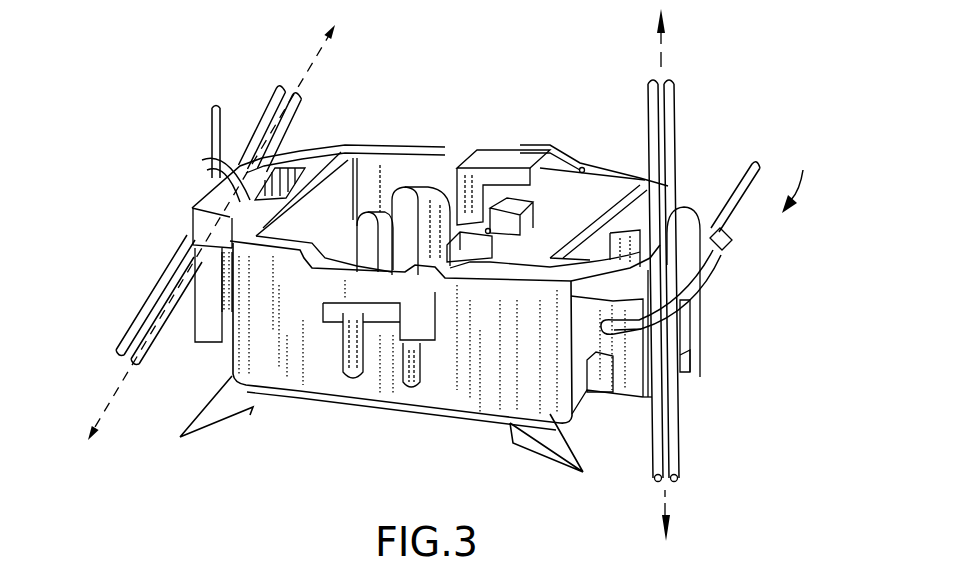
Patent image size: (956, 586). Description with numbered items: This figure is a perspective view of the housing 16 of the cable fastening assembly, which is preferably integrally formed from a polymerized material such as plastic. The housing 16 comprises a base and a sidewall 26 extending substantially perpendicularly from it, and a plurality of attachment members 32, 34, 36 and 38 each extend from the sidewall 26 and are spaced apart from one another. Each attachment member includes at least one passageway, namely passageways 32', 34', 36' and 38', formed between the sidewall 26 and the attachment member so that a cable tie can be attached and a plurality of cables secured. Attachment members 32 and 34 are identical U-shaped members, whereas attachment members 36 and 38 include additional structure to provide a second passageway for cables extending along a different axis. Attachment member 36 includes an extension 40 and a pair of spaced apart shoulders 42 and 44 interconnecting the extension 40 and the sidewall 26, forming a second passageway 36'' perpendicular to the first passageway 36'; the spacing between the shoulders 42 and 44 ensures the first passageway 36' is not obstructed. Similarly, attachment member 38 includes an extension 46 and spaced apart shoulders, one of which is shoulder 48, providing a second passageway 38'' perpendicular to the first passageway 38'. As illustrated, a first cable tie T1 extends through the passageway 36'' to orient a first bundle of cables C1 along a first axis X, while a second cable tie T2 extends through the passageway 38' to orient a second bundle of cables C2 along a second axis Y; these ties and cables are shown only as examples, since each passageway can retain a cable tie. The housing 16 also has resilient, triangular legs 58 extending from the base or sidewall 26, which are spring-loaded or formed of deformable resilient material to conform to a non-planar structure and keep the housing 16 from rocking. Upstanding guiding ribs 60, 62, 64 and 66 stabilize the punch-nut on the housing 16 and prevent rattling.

The housing 16 is at (796, 179).
The sidewall 26 is at (477, 412).
The attachment member 32 is at (524, 167).
The passageway 32' is at (503, 161).
The attachment member 34 is at (312, 389).
The passageway 34' is at (374, 396).
The attachment member 36 is at (669, 242).
The first passageway 36' is at (668, 247).
The second passageway 36'' is at (604, 401).
The attachment member 38 is at (266, 126).
The first passageway 38' is at (300, 149).
The second passageway 38'' is at (162, 299).
The extension 40 is at (687, 313).
The shoulder 42 is at (637, 397).
The shoulder 44 is at (687, 360).
The extension 46 is at (203, 262).
The shoulder 48 is at (213, 338).
The resilient legs 58 is at (187, 418).
The guiding rib 60 is at (490, 229).
The guiding rib 62 is at (414, 187).
The guiding rib 64 is at (584, 169).
The guiding rib 66 is at (364, 160).
The first cable tie T1 is at (730, 244).
The second cable tie T2 is at (205, 171).
The first bundle of cables C1 is at (681, 467).
The second bundle of cables C2 is at (121, 349).
The first axis X is at (664, 293).
The second axis Y is at (215, 230).